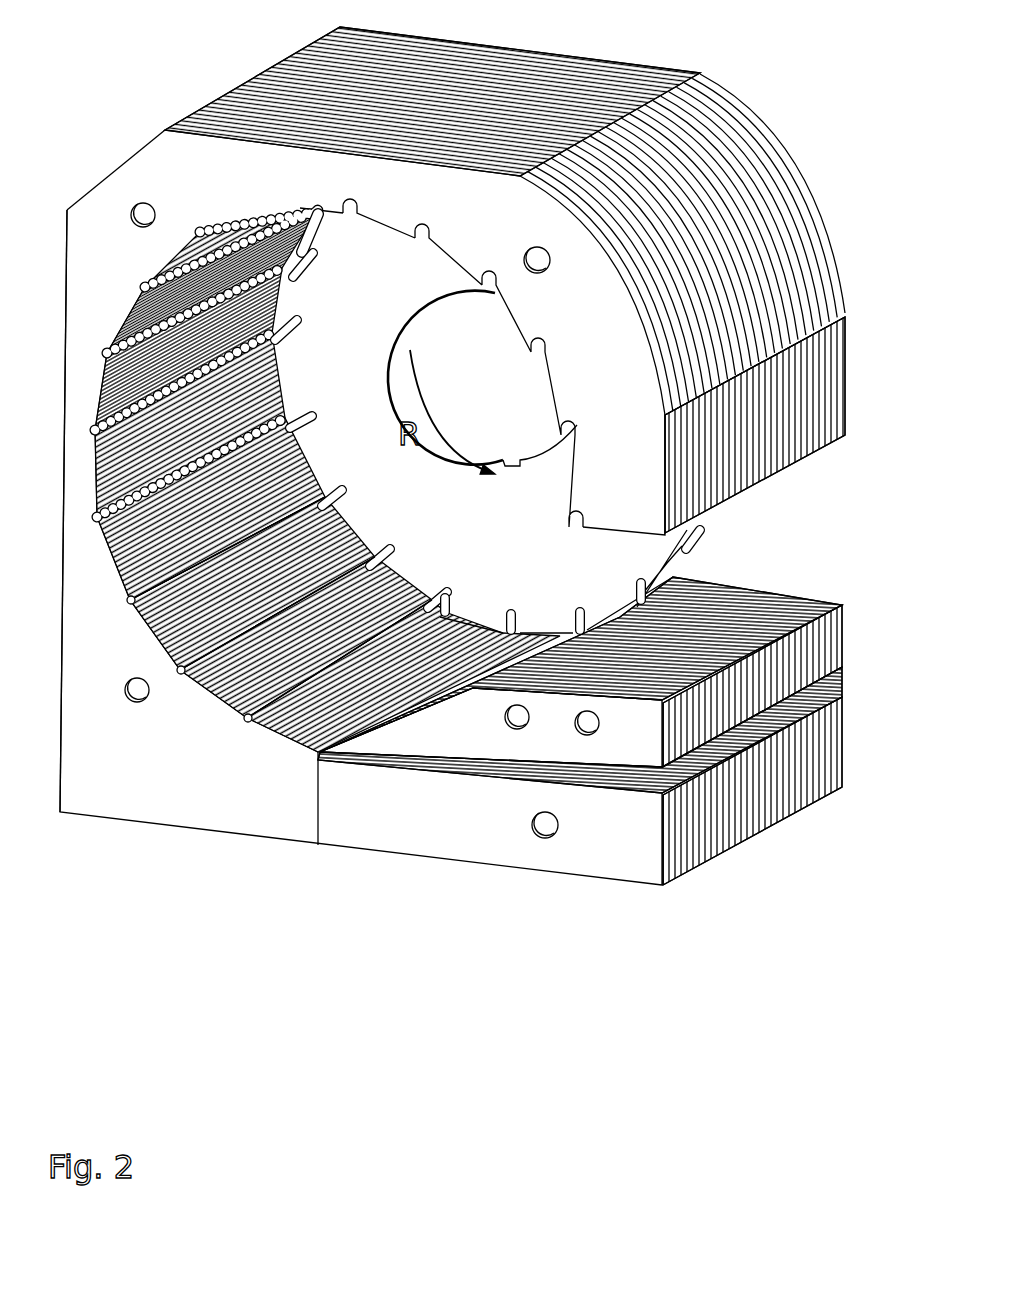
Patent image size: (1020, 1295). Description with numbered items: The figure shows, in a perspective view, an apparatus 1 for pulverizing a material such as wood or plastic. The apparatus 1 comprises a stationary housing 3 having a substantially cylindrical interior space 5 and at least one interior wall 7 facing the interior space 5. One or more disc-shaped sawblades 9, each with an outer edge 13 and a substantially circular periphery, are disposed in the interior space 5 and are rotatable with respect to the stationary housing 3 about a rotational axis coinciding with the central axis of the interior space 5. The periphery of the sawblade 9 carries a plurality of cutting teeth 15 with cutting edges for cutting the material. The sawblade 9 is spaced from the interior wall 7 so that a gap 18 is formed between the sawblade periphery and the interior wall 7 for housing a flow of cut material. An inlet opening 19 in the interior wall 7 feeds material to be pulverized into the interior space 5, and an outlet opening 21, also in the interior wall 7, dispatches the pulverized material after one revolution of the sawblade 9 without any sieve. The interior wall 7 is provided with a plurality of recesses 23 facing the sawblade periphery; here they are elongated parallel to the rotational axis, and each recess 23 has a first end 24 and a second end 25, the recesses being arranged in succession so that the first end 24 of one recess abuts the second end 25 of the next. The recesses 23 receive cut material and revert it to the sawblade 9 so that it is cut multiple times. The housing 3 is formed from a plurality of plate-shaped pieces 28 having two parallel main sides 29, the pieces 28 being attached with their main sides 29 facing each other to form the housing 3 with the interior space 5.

The apparatus for pulverizing a material 1 is at (160, 95).
The stationary housing 3 is at (107, 197).
The interior space 5 is at (293, 583).
The interior wall 7 is at (317, 745).
The sawblade 9 is at (705, 525).
The outer edge of the sawblade 13 is at (523, 635).
The cutting teeth 15 is at (690, 540).
The gap 18 is at (473, 622).
The inlet opening 19 is at (815, 477).
The outlet opening 21 is at (822, 678).
The recesses 23 is at (180, 660).
The first end 24 is at (117, 530).
The second end 25 is at (133, 607).
The plate-shaped pieces 28 is at (746, 92).
The main sides 29 is at (97, 273).